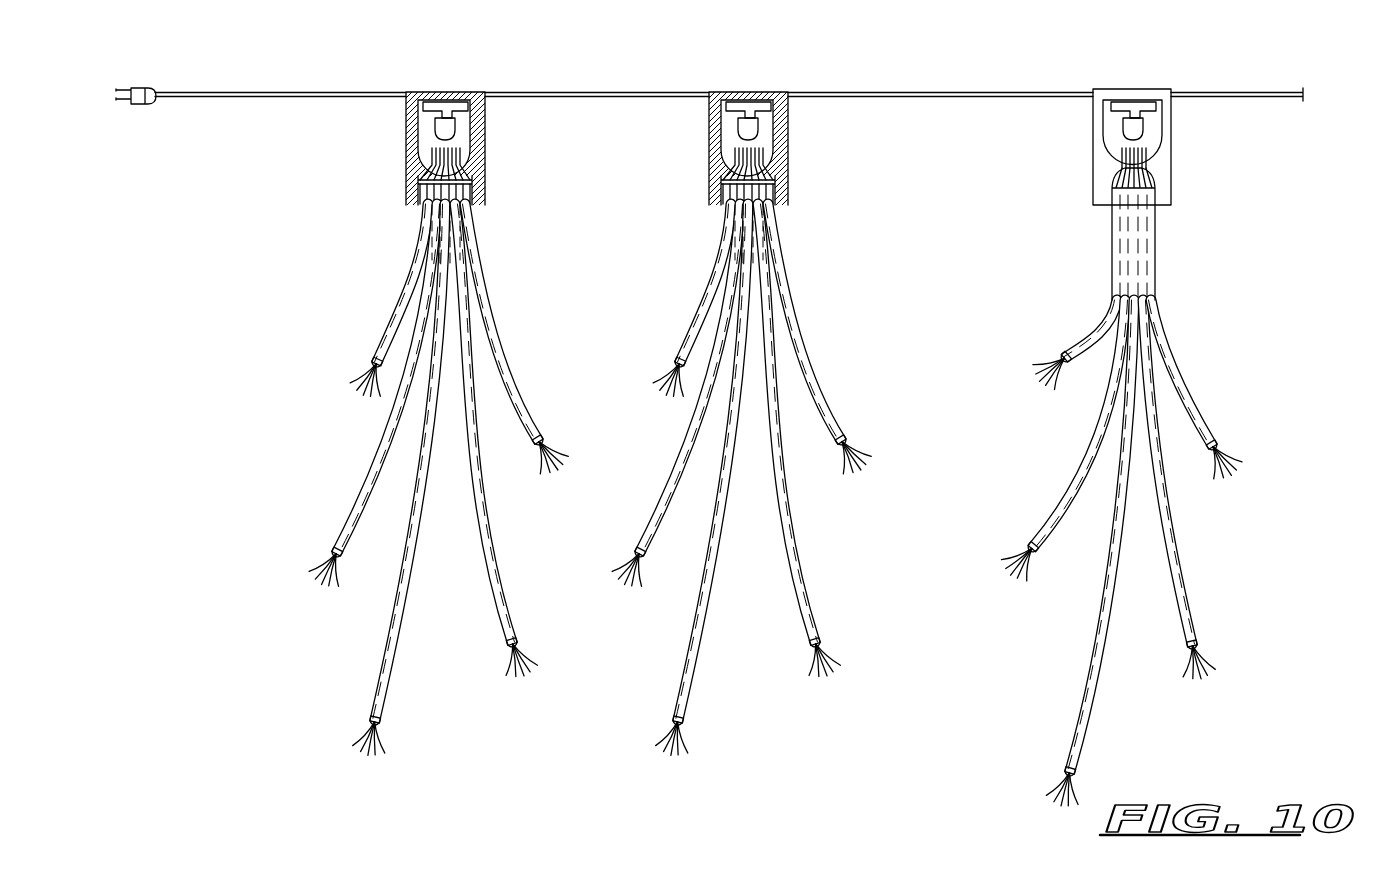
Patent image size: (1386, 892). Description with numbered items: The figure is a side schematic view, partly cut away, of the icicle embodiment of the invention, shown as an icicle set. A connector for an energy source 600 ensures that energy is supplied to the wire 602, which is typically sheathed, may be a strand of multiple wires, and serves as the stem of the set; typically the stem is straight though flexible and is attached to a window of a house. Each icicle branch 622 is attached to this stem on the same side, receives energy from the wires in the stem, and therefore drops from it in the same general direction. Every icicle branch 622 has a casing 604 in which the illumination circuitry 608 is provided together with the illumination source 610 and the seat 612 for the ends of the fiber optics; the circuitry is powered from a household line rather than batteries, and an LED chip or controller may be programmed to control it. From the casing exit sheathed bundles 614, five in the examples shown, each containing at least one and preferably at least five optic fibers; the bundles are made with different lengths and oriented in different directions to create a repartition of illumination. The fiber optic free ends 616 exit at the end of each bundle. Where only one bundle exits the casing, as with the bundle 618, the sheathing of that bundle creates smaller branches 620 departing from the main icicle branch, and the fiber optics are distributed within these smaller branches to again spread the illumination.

The connector for an energy source 600 is at (143, 86).
The wire 602 is at (282, 92).
The casing 604 is at (461, 92).
The illumination circuitry 608 is at (432, 108).
The illumination source 610 is at (449, 119).
The seat for the fiber optics ends 612 is at (470, 163).
The sheathed bundles 614 is at (418, 280).
The fiber optic free ends 616 is at (556, 440).
The bundle 618 is at (1138, 226).
The smaller branches 620 is at (1192, 410).
The icicle branch 622 is at (373, 313).